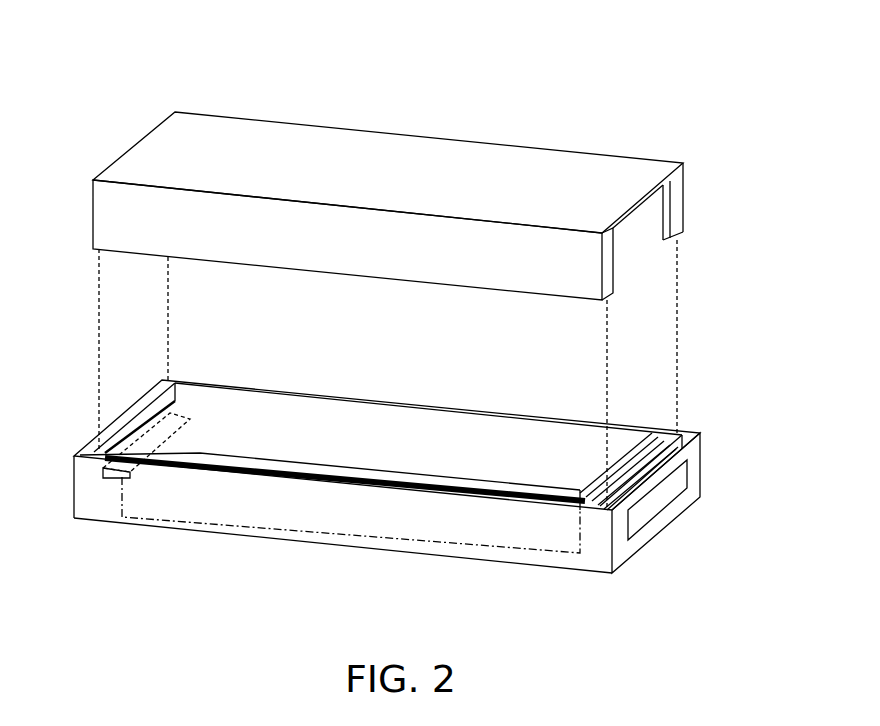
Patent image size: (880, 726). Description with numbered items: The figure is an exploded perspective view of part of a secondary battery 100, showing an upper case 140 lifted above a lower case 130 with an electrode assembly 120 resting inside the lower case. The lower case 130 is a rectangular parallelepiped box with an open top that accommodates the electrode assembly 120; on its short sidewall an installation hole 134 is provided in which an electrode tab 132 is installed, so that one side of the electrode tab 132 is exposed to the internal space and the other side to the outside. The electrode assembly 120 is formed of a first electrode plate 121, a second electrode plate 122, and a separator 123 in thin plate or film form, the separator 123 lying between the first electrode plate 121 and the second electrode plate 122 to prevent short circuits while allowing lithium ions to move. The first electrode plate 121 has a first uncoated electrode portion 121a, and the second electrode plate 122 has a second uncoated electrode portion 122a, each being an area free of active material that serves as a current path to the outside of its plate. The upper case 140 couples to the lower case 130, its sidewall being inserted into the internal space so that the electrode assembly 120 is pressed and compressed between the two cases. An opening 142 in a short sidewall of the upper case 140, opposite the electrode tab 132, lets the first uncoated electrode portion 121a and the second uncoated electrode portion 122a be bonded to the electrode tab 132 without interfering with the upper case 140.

The secondary battery 100 is at (414, 68).
The upper case 140 is at (595, 172).
The opening 142 is at (633, 237).
The lower case 130 is at (693, 450).
The electrode tab 132 is at (672, 487).
The installation hole 134 is at (632, 518).
The electrode assembly 120 is at (590, 356).
The first electrode plate 121 is at (508, 435).
The first uncoated electrode portion 121a is at (105, 479).
The second electrode plate 122 is at (597, 460).
The second uncoated electrode portion 122a is at (605, 515).
The separator 123 is at (597, 481).